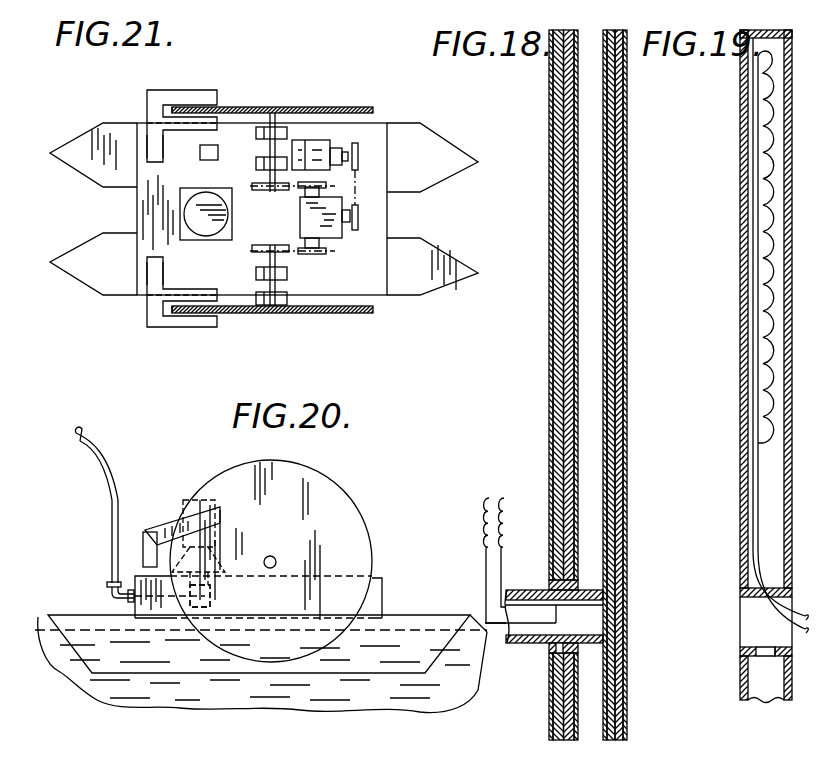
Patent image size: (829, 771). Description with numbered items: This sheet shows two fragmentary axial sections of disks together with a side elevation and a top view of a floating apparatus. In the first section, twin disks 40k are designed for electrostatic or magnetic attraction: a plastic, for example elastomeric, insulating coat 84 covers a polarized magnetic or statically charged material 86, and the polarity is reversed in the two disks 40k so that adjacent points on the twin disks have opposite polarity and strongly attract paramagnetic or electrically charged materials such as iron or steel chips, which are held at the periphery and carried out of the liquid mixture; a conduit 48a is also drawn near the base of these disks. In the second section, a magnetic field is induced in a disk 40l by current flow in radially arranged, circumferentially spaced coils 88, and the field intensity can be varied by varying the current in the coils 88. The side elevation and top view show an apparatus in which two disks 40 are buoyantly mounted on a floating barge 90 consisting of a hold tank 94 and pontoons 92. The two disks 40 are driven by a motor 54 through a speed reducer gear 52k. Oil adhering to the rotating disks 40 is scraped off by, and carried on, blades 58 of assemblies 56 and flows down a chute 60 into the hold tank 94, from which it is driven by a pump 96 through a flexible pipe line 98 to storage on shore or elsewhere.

In FIG. 21, the disk 40 is at (380, 99).
In FIG. 20, the disk 40 is at (346, 493).
In FIG. 18, the disk 40k is at (588, 385).
In FIG. 19, the disk 40l is at (740, 361).
In FIG. 18, the conduit 48a is at (520, 590).
In FIG. 21, the speed reducer gear 52k is at (300, 218).
In FIG. 21, the motor 54 is at (318, 145).
In FIG. 21, the assembly 56 is at (178, 95).
In FIG. 20, the assembly 56 is at (150, 530).
In FIG. 21, the blade 58 is at (214, 300).
In FIG. 21, the chute 60 is at (159, 148).
In FIG. 20, the chute 60 is at (143, 552).
In FIG. 18, the insulating coat 84 is at (556, 195).
In FIG. 18, the polarized magnetic or statically charged material 86 is at (618, 264).
In FIG. 19, the coil 88 is at (773, 351).
In FIG. 21, the floating barge 90 is at (266, 214).
In FIG. 20, the floating barge 90 is at (261, 606).
In FIG. 21, the pontoon 92 is at (440, 179).
In FIG. 20, the pontoon 92 is at (438, 624).
In FIG. 21, the hold tank 94 is at (386, 226).
In FIG. 20, the hold tank 94 is at (384, 591).
In FIG. 21, the pump 96 is at (204, 227).
In FIG. 20, the pump 96 is at (238, 586).
In FIG. 20, the flexible pipe line 98 is at (108, 463).